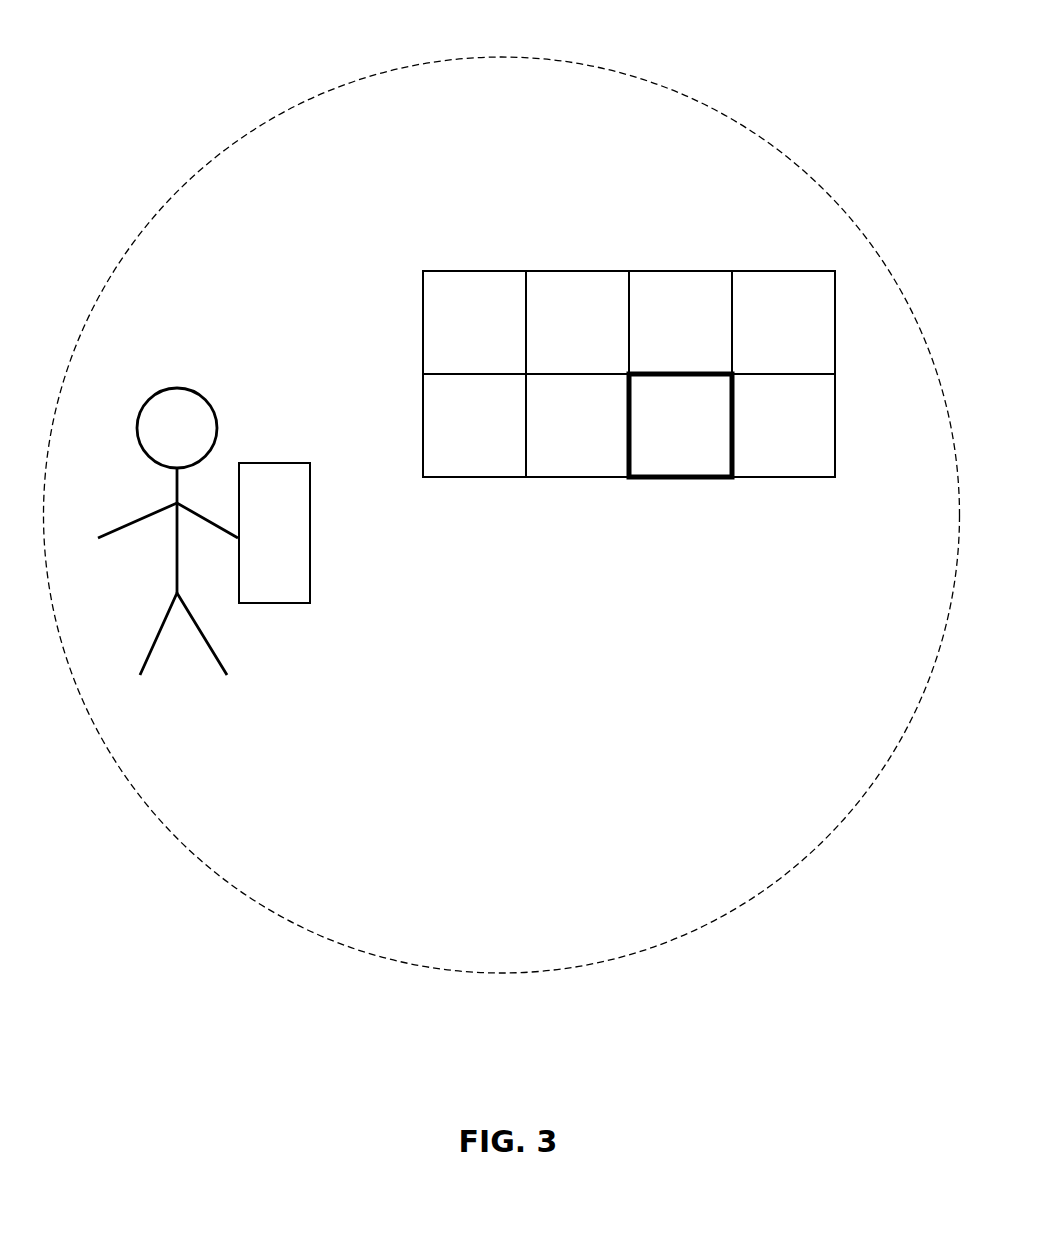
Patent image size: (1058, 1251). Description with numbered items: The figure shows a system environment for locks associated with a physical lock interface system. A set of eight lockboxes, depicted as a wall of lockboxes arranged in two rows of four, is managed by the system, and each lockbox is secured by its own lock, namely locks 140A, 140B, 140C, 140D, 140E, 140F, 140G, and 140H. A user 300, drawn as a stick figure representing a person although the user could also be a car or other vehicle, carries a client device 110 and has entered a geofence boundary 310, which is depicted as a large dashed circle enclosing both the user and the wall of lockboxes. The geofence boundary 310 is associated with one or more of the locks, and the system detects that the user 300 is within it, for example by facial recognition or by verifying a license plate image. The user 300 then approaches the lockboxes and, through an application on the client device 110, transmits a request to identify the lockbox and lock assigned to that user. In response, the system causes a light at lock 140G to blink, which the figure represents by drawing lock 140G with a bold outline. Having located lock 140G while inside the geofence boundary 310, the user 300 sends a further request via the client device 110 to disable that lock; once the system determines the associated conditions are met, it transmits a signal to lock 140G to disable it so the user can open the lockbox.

The geofence boundary 310 is at (640, 78).
The user 300 is at (155, 376).
The client device 110 is at (255, 544).
The lock 140A is at (448, 335).
The lock 140B is at (551, 335).
The lock 140C is at (654, 335).
The lock 140D is at (757, 335).
The lock 140E is at (448, 438).
The lock 140F is at (551, 438).
The lock 140G is at (654, 438).
The lock 140H is at (757, 438).